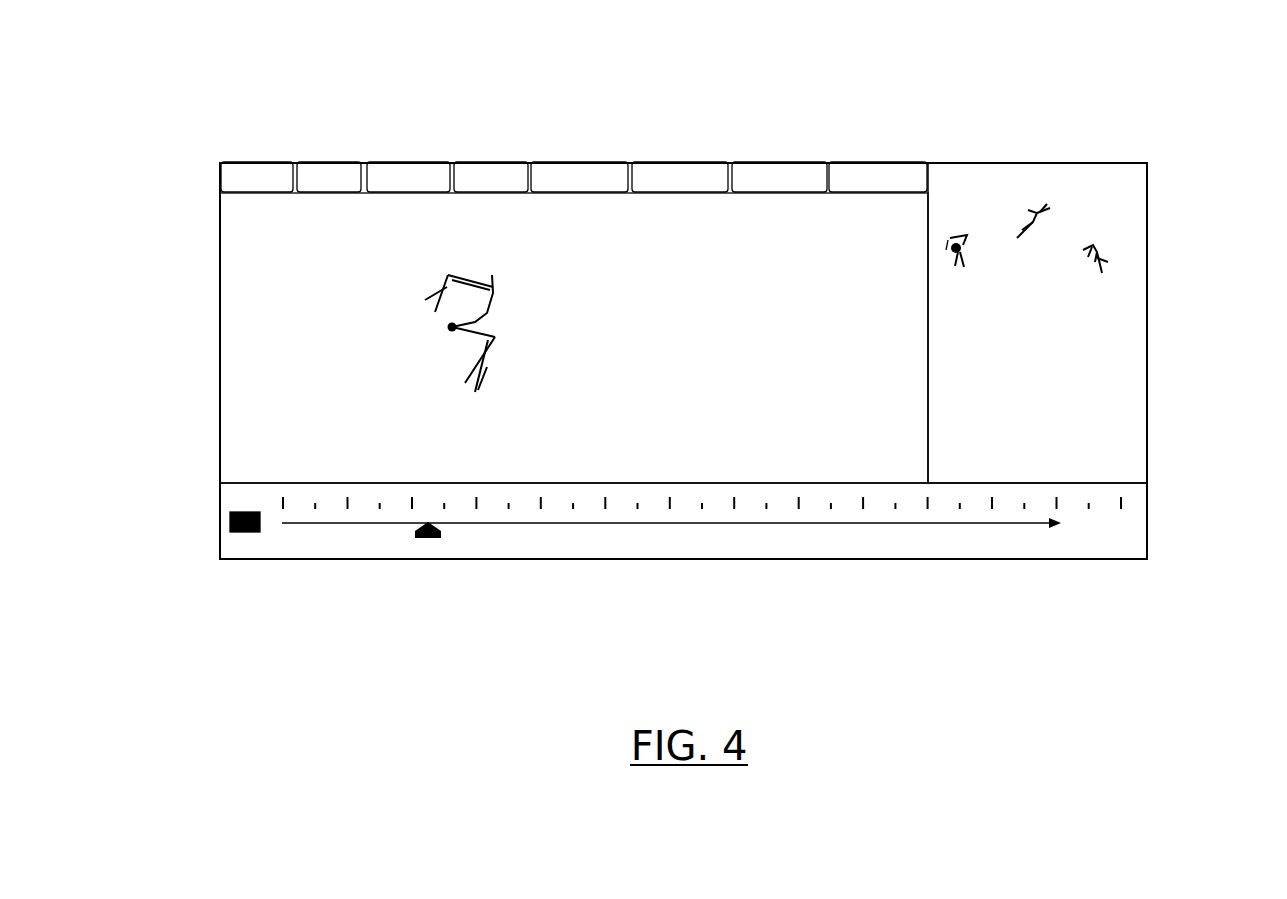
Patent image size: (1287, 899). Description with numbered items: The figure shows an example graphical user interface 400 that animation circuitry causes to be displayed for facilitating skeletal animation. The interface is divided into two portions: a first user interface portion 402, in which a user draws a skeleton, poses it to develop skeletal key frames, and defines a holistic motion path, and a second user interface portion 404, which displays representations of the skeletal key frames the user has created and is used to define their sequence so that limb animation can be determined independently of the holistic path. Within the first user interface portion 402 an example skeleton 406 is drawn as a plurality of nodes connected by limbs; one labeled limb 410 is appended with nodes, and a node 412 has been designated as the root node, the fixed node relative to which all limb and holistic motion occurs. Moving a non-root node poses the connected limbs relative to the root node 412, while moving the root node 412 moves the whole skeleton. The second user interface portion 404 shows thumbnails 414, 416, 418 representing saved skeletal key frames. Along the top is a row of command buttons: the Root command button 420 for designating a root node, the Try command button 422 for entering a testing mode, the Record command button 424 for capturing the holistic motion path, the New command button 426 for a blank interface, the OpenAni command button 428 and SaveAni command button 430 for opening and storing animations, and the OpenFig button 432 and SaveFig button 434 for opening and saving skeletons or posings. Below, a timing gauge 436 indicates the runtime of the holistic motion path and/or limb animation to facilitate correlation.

The graphical user interface 400 is at (683, 285).
The first user interface portion 402 is at (533, 338).
The second user interface portion 404 is at (1078, 323).
The skeleton 406 is at (466, 322).
The limb 410 is at (509, 366).
The root node 412 is at (446, 325).
The thumbnail 414 is at (987, 282).
The thumbnail 416 is at (1003, 207).
The thumbnail 418 is at (1111, 243).
The Root command button 420 is at (238, 160).
The Try command button 422 is at (310, 160).
The Record command button 424 is at (404, 160).
The New command button 426 is at (481, 160).
The OpenAni command button 428 is at (579, 160).
The SaveAni command button 430 is at (680, 160).
The OpenFig button 432 is at (779, 160).
The SaveFig button 434 is at (878, 160).
The timing gauge 436 is at (683, 554).